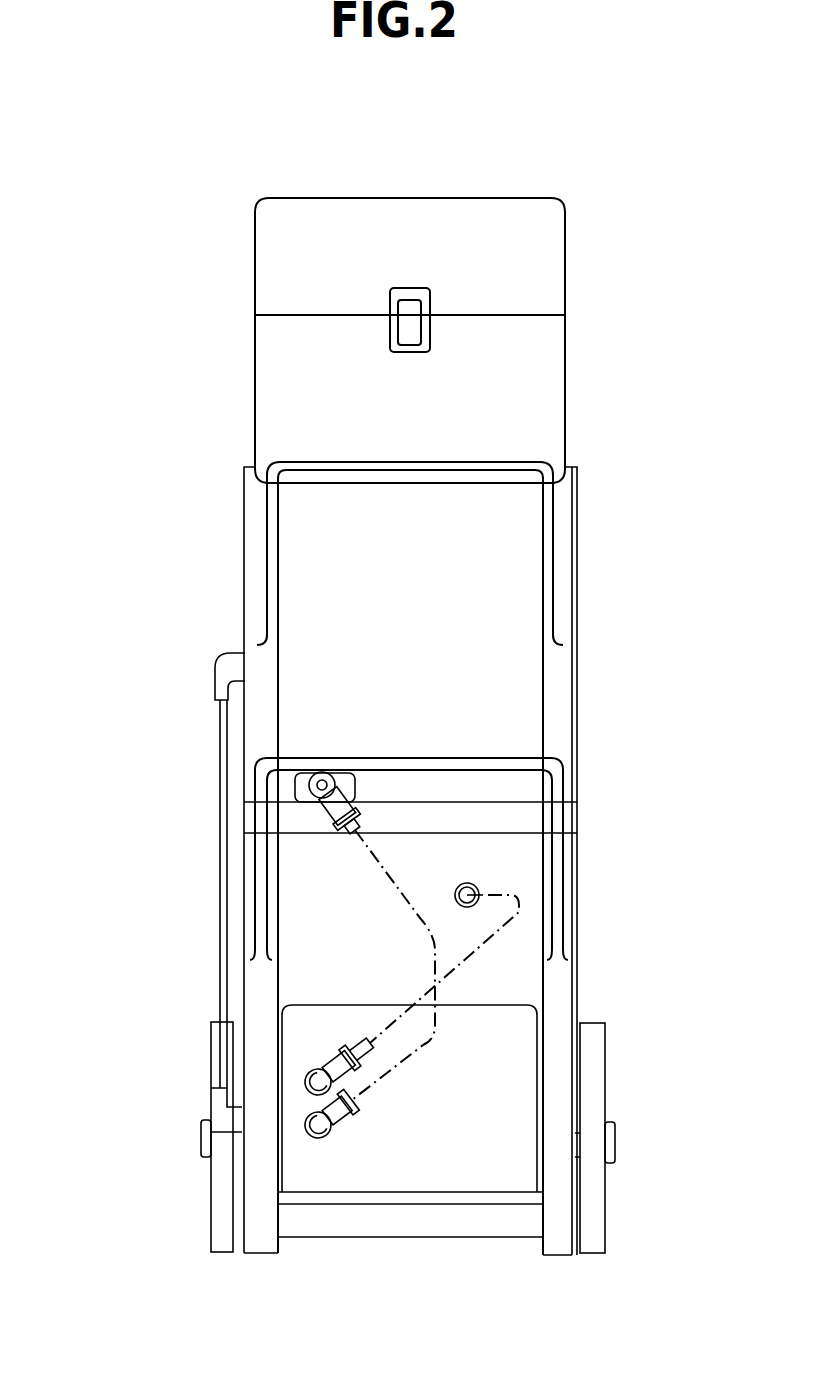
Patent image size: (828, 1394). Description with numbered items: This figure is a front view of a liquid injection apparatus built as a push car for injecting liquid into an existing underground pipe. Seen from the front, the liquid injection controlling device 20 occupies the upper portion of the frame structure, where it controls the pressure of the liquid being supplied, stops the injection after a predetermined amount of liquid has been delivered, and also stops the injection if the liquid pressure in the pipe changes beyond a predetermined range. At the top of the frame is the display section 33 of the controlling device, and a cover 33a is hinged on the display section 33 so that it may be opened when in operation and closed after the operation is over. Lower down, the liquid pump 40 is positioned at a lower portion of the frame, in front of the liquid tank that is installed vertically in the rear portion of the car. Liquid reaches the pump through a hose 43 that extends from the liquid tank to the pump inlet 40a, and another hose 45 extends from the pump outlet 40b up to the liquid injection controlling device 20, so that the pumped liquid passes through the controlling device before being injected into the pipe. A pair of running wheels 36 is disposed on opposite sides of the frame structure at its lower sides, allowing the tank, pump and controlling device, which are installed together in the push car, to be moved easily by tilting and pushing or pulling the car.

The liquid injection controlling device 20 is at (500, 660).
The display section 33 is at (542, 365).
The cover 33a is at (542, 265).
The running wheels 36 is at (597, 1245).
The liquid pump 40 is at (507, 1065).
The pump inlet 40a is at (305, 1082).
The pump outlet 40b is at (308, 1140).
The hose 43 is at (520, 907).
The hose 45 is at (393, 877).